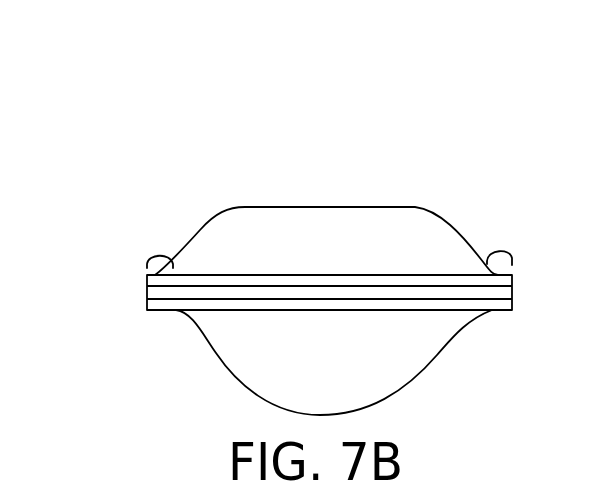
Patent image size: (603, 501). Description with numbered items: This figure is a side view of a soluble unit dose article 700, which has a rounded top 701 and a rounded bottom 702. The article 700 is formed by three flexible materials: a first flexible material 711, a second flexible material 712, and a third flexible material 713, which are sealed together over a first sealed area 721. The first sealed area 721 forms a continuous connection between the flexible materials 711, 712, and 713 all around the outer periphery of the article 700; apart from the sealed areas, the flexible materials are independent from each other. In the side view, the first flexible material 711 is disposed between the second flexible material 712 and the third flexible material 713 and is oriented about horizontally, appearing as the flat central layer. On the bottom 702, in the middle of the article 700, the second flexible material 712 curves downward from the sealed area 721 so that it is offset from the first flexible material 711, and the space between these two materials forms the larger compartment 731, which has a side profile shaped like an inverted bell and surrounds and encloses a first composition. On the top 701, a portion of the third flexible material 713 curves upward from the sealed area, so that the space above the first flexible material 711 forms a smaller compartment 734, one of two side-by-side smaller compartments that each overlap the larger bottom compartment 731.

The soluble unit dose article 700 is at (188, 131).
The rounded top 701 is at (230, 178).
The rounded bottom 702 is at (248, 395).
The first flexible material 711 is at (147, 298).
The second flexible material 712 is at (212, 348).
The third flexible material 713 is at (200, 228).
The first sealed area 721 is at (162, 255).
The larger bottom compartment 731 is at (367, 348).
The smaller compartment 734 is at (358, 253).